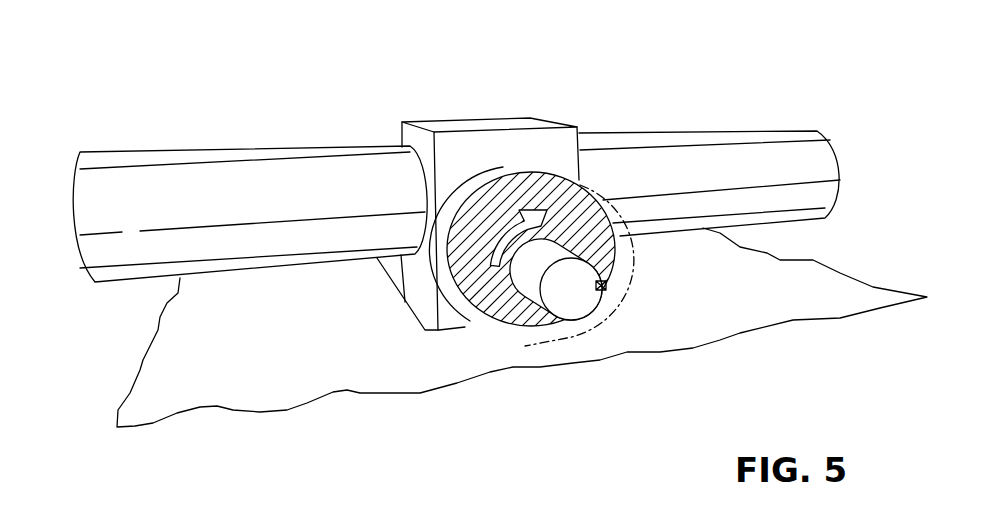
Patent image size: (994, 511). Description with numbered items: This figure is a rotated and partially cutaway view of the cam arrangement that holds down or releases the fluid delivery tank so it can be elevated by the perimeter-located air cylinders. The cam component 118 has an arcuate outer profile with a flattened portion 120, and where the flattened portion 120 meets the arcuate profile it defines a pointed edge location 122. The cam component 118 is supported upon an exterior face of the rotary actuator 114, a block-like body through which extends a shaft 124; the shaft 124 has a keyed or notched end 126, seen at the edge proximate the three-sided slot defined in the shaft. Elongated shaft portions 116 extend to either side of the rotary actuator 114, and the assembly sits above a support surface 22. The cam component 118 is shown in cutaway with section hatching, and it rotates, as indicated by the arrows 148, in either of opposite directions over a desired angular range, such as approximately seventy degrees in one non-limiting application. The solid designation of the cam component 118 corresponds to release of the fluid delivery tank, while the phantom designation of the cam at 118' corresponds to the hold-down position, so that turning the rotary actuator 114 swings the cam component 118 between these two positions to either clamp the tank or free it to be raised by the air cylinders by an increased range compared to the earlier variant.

The support surface 22 is at (228, 368).
The rotary actuator 114 is at (456, 125).
The shaft 116 is at (215, 173).
The cam component 118 is at (521, 168).
The cam in hold-down position 118' is at (569, 316).
The flattened portion 120 is at (495, 328).
The pointed edge location 122 is at (428, 342).
The shaft 124 is at (577, 297).
The keyed or notched end 126 is at (607, 286).
The rotation arrows 148 is at (519, 208).